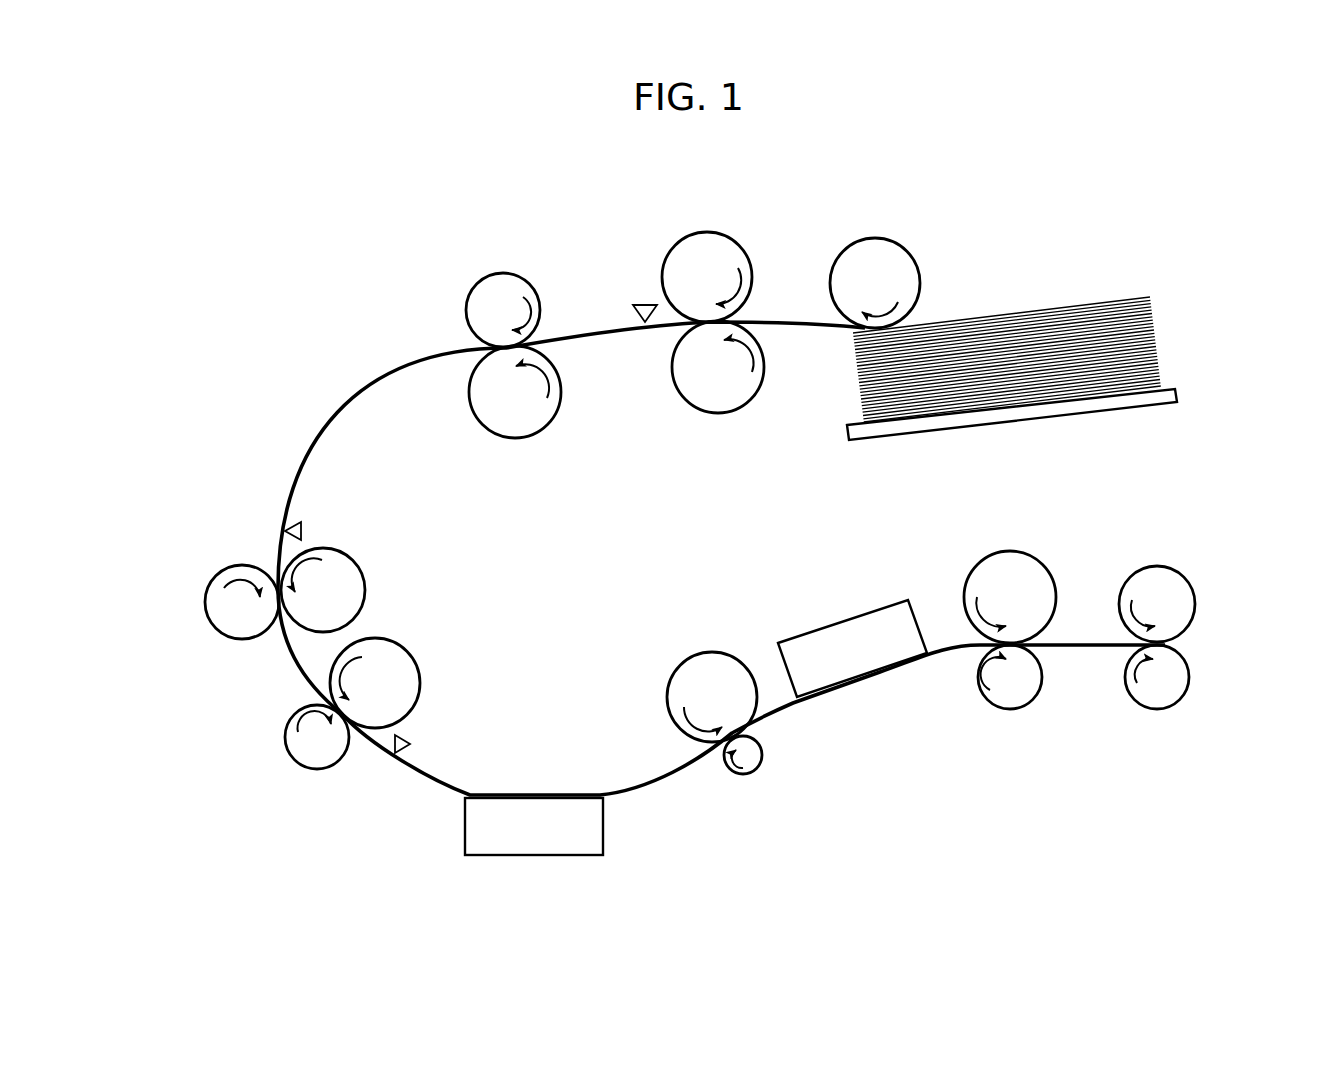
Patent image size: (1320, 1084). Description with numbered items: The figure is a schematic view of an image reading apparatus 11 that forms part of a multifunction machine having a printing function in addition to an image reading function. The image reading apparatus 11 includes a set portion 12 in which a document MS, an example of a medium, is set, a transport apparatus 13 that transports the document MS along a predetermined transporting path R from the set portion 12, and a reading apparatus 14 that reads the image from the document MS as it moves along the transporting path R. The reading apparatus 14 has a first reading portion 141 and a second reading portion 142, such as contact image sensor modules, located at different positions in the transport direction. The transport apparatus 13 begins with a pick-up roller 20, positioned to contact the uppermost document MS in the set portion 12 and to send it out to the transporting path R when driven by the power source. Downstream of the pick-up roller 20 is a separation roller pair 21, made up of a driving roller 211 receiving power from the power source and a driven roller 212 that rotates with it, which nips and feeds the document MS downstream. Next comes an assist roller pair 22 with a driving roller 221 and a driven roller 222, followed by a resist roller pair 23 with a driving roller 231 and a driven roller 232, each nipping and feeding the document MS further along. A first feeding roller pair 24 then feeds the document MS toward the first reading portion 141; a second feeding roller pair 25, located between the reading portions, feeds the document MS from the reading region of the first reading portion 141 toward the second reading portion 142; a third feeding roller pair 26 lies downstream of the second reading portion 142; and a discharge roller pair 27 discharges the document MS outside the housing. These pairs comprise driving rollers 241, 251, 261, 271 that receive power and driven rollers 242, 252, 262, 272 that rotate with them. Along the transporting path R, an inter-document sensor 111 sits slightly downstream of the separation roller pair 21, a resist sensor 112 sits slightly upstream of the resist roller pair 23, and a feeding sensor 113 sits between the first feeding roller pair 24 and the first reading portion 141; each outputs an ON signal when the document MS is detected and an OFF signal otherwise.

The image reading apparatus 11 is at (999, 178).
The set portion 12 is at (1179, 396).
The transport apparatus 13 is at (332, 376).
The reading apparatus 14 is at (696, 741).
The first reading portion 141 is at (533, 858).
The second reading portion 142 is at (816, 628).
The pick-up roller 20 is at (871, 243).
The separation roller pair 21 is at (753, 232).
The driving roller 211 is at (718, 413).
The driven roller 212 is at (704, 236).
The assist roller pair 22 is at (545, 274).
The driving roller 221 is at (517, 439).
The driven roller 222 is at (500, 275).
The resist roller pair 23 is at (224, 544).
The driving roller 231 is at (368, 589).
The driven roller 232 is at (204, 606).
The first feeding roller pair 24 is at (356, 776).
The driving roller 241 is at (420, 682).
The driven roller 242 is at (284, 737).
The second feeding roller pair 25 is at (664, 652).
The driving roller 251 is at (706, 653).
The driven roller 252 is at (763, 755).
The third feeding roller pair 26 is at (962, 547).
The driving roller 261 is at (1009, 554).
The driven roller 262 is at (1010, 710).
The discharge roller pair 27 is at (1205, 576).
The driving roller 271 is at (1156, 568).
The driven roller 272 is at (1157, 710).
The inter-document sensor 111 is at (642, 303).
The resist sensor 112 is at (304, 531).
The feeding sensor 113 is at (412, 740).
The document MS is at (1047, 311).
The transporting path R is at (308, 460).